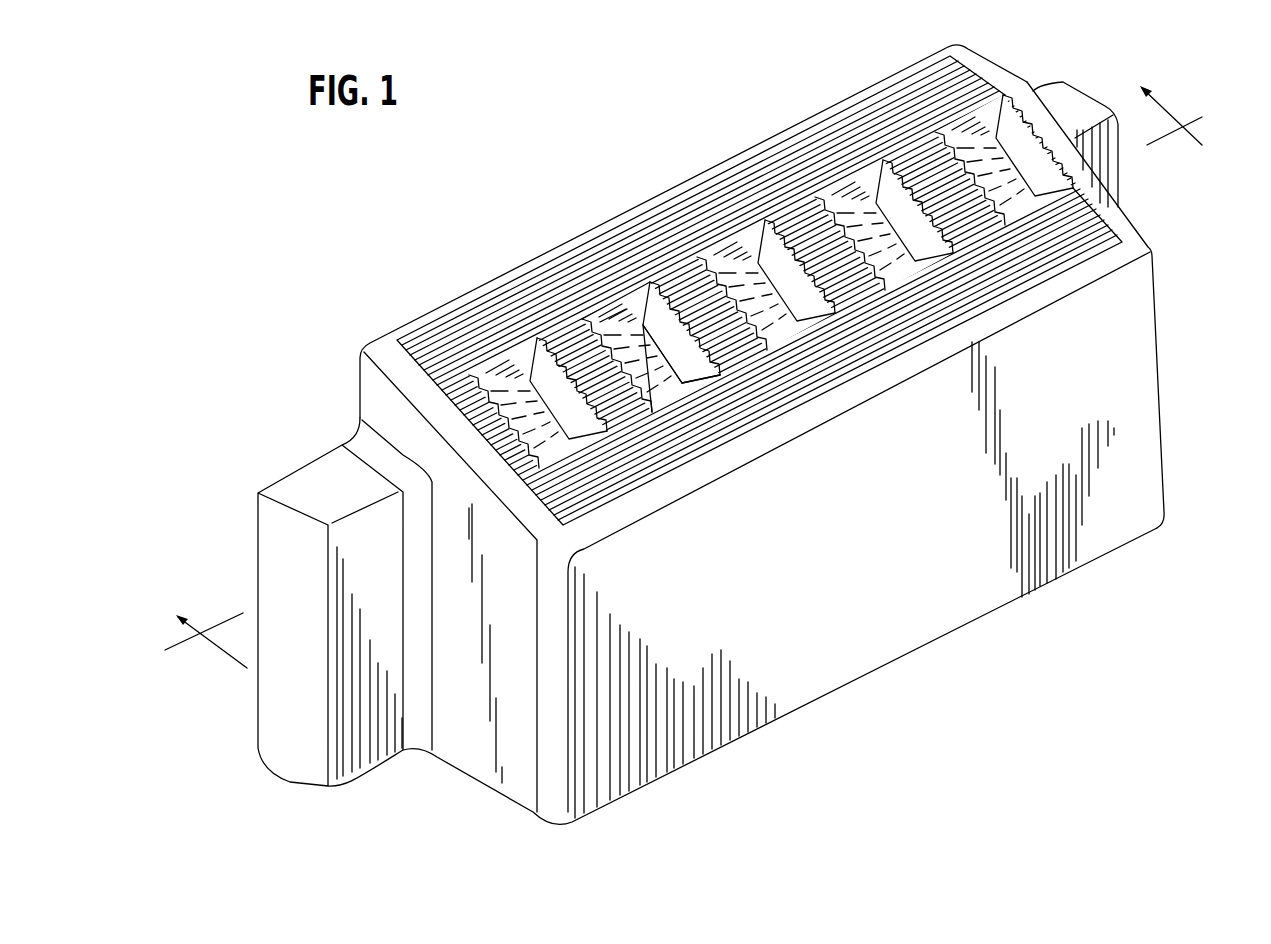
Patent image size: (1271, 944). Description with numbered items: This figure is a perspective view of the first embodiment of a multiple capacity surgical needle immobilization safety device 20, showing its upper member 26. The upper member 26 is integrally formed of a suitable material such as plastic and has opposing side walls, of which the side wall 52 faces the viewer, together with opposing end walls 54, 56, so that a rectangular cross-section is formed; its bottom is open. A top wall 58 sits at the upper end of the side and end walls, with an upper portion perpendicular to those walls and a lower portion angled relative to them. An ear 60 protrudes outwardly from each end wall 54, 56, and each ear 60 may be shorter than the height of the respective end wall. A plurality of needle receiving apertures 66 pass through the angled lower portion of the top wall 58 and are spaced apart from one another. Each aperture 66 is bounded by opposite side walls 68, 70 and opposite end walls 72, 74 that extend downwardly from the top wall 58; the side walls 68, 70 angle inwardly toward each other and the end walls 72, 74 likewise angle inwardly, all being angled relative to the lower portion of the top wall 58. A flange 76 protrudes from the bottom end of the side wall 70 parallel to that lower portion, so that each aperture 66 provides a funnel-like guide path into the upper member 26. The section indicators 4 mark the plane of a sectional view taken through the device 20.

The multiple capacity surgical needle immobilization safety device 20 is at (813, 104).
The upper member 26 is at (1145, 472).
The section line 4- 4 is at (665, 359).
The side wall 52 is at (922, 634).
The end wall 54 is at (473, 740).
The end wall 56 is at (1158, 357).
The top wall 58 is at (607, 243).
The ear 60 is at (318, 477).
The needle receiving aperture 66 is at (557, 451).
The side wall 68 is at (692, 388).
The side wall 70 is at (610, 318).
The end wall 72 is at (658, 380).
The end wall 74 is at (740, 405).
The flange 76 is at (627, 328).